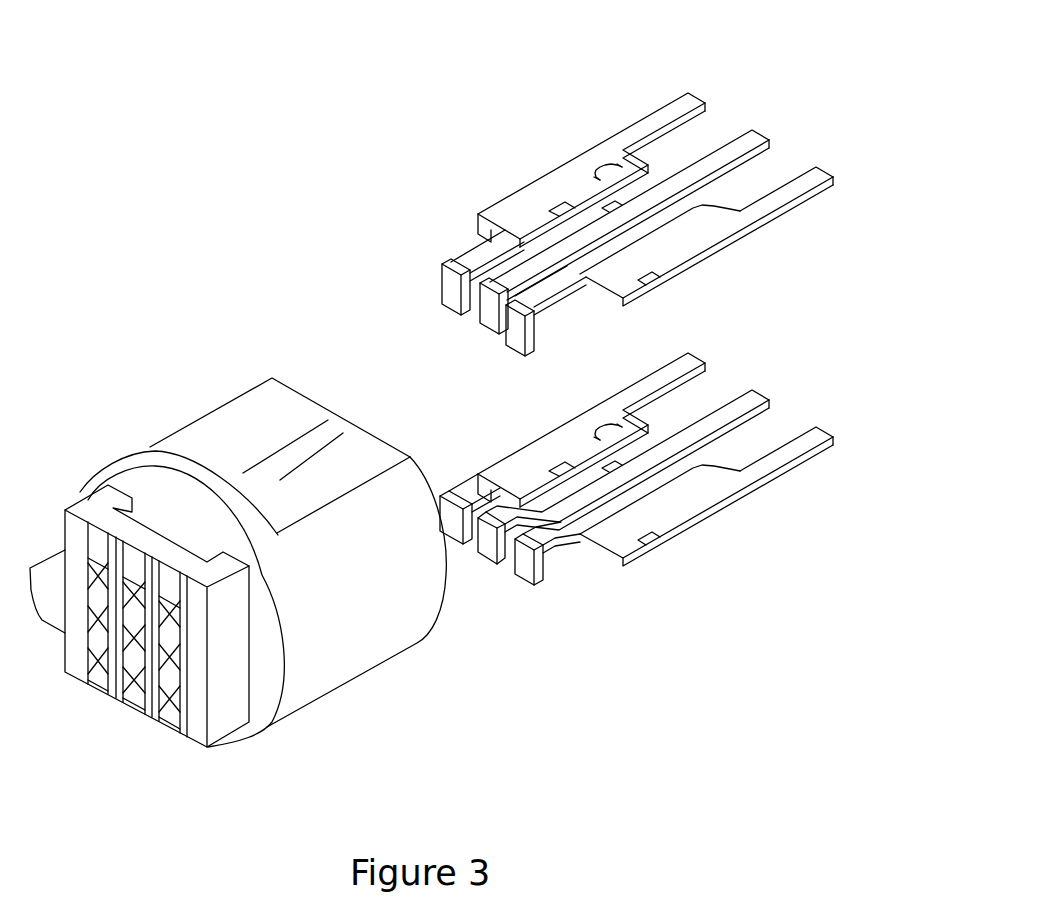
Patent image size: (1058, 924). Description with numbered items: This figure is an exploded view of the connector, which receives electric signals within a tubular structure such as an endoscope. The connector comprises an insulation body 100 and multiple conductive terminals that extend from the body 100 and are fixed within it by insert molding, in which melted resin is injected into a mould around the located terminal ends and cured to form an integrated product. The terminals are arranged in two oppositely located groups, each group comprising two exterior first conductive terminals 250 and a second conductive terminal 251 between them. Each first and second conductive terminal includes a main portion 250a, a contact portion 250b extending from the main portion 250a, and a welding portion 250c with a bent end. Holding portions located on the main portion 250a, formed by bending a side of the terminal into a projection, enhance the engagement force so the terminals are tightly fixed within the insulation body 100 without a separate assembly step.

The insulation body 100 is at (353, 613).
The first conductive terminal 250 is at (563, 180).
The second conductive terminal 251 is at (738, 147).
The main portion 250a is at (668, 518).
The contact portion 250b is at (760, 470).
The welding portion 250c is at (537, 583).